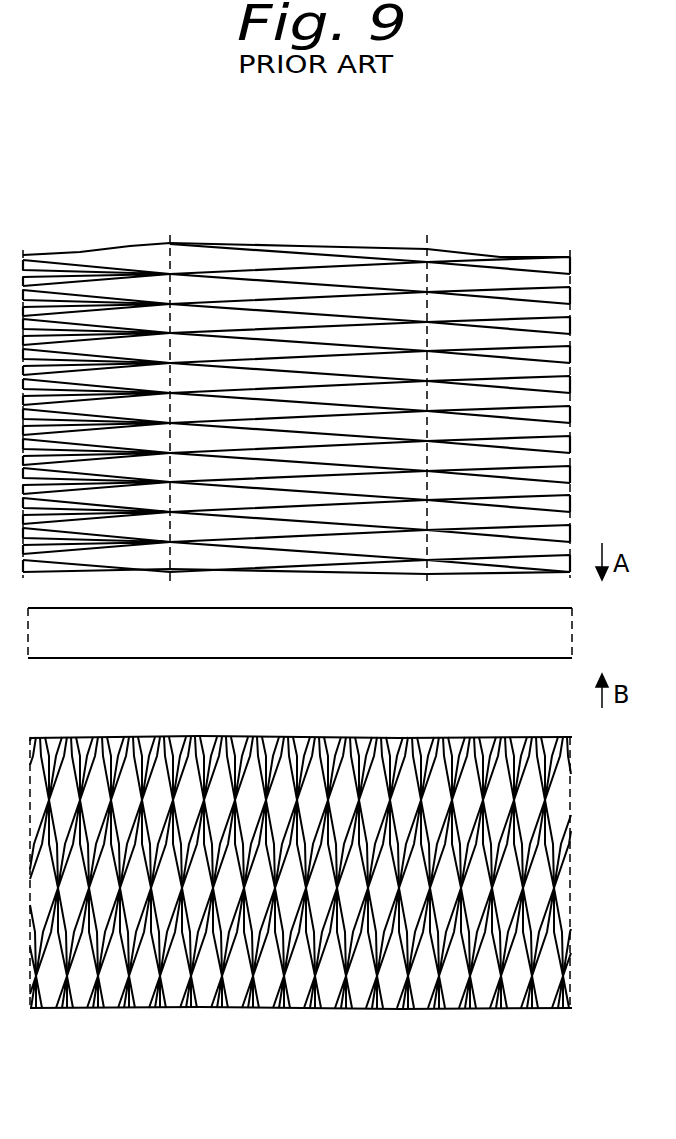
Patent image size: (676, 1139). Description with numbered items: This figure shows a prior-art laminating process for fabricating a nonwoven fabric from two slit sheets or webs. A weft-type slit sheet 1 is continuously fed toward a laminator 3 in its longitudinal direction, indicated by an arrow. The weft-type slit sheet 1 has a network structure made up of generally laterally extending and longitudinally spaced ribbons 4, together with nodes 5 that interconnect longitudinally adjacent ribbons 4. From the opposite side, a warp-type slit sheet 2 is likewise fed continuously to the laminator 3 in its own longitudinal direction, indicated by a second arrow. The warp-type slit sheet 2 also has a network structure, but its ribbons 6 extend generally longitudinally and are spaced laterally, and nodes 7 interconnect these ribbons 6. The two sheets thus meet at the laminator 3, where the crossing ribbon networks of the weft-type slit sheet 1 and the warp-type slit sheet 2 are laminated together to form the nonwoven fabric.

The weft-type slit sheet 1 is at (316, 389).
The warp-type slit sheet 2 is at (321, 911).
The laminator 3 is at (563, 635).
The ribbons 4 is at (555, 300).
The nodes 5 is at (430, 302).
The ribbons 6 is at (462, 970).
The nodes 7 is at (338, 962).